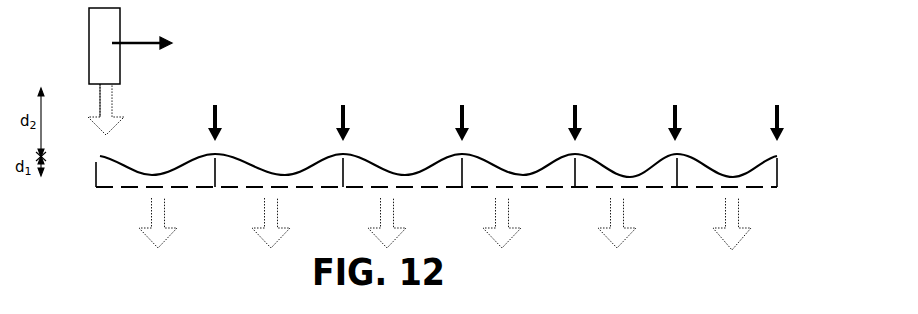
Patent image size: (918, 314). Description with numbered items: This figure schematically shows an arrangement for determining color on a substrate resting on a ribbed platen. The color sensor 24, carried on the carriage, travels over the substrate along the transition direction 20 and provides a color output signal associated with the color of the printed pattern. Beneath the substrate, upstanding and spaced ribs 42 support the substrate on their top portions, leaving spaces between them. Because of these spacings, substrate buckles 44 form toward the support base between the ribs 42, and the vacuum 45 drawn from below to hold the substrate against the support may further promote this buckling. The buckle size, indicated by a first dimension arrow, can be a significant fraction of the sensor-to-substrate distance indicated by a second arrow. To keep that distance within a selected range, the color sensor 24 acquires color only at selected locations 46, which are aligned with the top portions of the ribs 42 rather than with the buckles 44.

The transition direction 20 is at (132, 41).
The color sensor 24 is at (97, 15).
The ribs 42 is at (212, 169).
The substrate buckles 44 is at (152, 173).
The vacuum 45 is at (151, 209).
The selected locations 46 is at (496, 111).